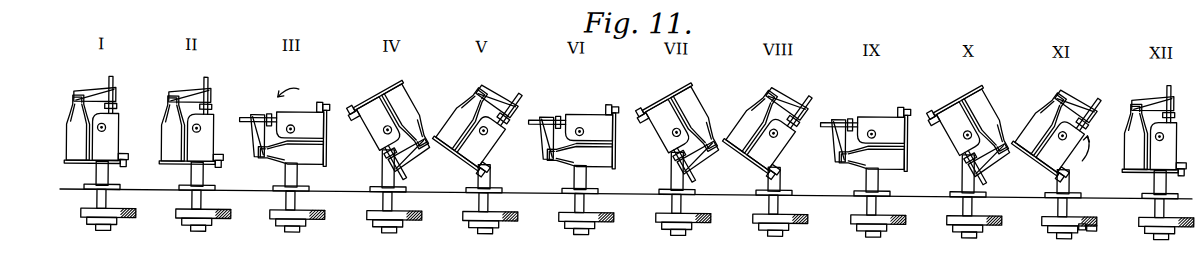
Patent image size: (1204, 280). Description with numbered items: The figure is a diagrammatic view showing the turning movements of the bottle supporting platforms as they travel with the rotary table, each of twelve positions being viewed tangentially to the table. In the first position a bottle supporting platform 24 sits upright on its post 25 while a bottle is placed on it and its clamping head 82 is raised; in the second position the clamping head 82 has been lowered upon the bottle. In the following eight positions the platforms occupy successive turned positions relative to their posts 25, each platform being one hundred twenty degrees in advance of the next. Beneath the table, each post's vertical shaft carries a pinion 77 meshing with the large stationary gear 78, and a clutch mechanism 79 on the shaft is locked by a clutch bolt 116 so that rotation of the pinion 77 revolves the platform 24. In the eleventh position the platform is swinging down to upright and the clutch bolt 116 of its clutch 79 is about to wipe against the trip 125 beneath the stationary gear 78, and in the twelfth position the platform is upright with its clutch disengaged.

The bottle supporting platform 24 is at (92, 164).
The post 25 is at (111, 141).
The clamping head 82 is at (96, 84).
The pinion 77 is at (116, 211).
The clutch mechanism 79 is at (92, 219).
The stationary gear 78 is at (1088, 209).
The clutch bolt 116 is at (1082, 221).
The trip block 125 is at (1096, 218).